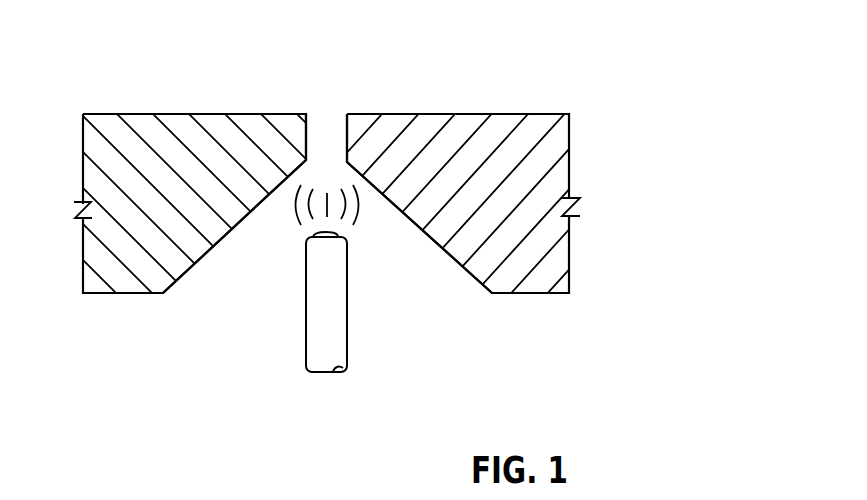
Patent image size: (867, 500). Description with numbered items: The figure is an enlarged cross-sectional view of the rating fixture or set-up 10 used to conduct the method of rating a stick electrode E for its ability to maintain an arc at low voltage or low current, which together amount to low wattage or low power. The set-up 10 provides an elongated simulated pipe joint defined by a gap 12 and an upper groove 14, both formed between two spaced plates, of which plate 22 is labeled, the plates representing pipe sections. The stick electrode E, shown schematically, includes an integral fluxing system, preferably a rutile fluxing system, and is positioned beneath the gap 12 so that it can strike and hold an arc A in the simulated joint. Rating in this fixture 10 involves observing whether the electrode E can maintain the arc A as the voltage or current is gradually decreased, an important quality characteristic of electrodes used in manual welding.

The rating fixture or set-up 10 is at (570, 52).
The gap 12 is at (327, 122).
The upper groove 14 is at (215, 233).
The plate 22 is at (218, 128).
The arc A is at (367, 202).
The stick electrode E is at (350, 303).